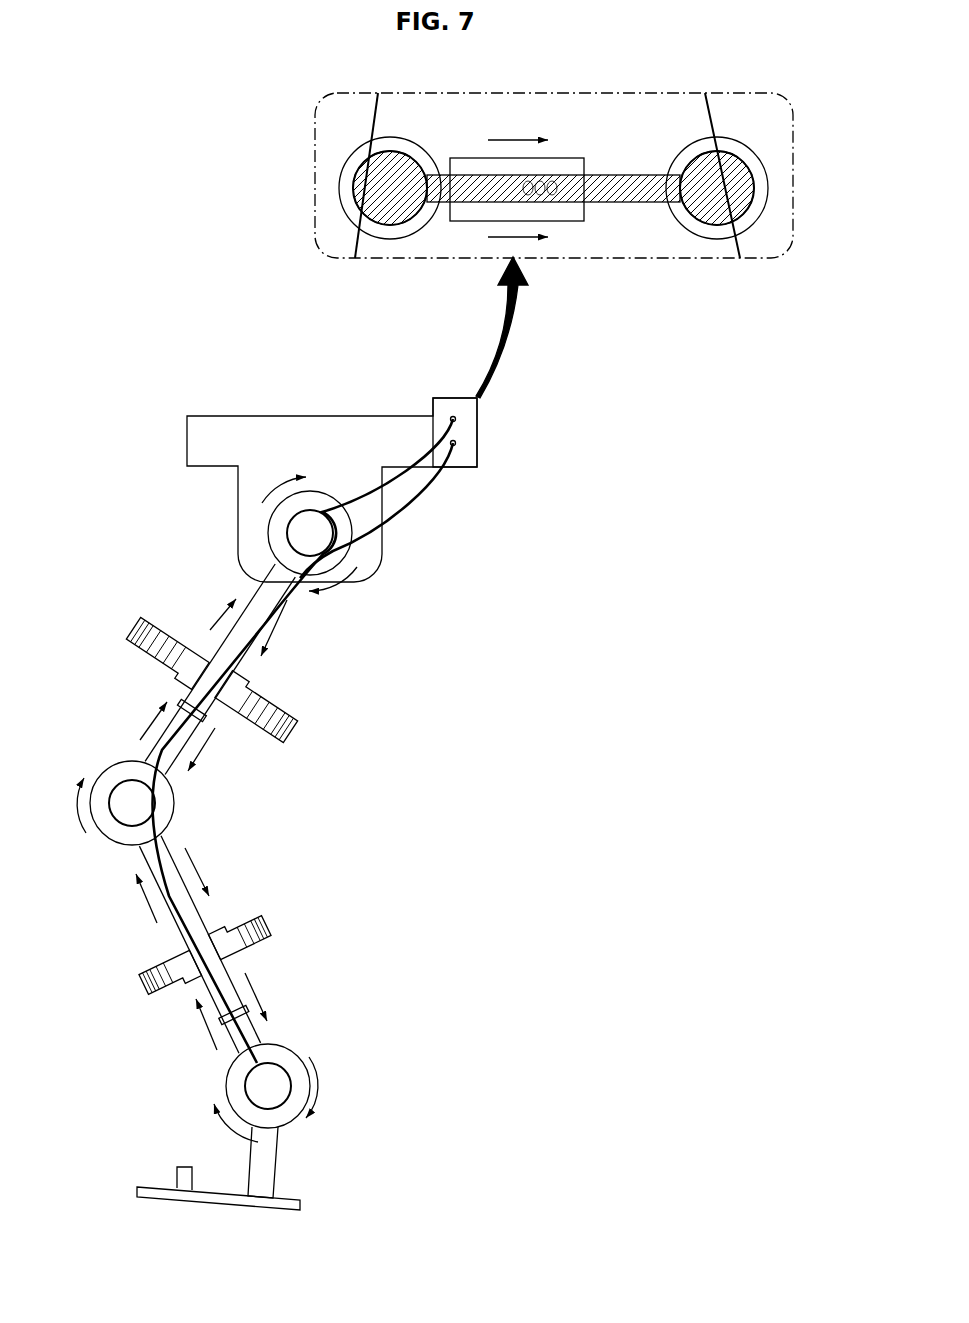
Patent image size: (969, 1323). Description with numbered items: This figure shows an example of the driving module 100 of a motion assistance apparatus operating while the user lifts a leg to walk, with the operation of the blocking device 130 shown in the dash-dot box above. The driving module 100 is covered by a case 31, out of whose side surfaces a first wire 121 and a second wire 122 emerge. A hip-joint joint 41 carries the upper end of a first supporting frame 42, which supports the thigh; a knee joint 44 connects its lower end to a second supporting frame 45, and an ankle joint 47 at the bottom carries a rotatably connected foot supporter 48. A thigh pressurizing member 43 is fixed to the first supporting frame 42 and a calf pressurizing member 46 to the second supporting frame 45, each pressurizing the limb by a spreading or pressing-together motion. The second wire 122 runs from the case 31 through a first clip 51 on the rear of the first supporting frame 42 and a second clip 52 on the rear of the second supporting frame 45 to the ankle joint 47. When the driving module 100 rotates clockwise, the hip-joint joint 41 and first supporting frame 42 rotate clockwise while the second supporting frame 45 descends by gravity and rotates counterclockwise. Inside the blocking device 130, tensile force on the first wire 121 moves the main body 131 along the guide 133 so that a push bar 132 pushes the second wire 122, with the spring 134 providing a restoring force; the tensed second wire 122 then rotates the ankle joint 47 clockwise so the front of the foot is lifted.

The driving module 100 is at (441, 376).
The case 31 is at (478, 432).
The hip-joint joint 41 is at (297, 535).
The first supporting frame 42 is at (280, 605).
The thigh pressurizing member 43 is at (282, 705).
The knee joint 44 is at (125, 795).
The second supporting frame 45 is at (140, 850).
The calf pressurizing member 46 is at (258, 942).
The ankle joint 47 is at (255, 1088).
The foot supporter 48 is at (215, 1203).
The first clip 51 is at (200, 716).
The second clip 52 is at (225, 1020).
The first wire 121 is at (372, 125).
The second wire 122 is at (722, 122).
The blocking device 130 is at (552, 211).
The main body 131 is at (480, 190).
The push bar 132 is at (375, 183).
The guide 133 is at (562, 158).
The spring 134 is at (553, 200).